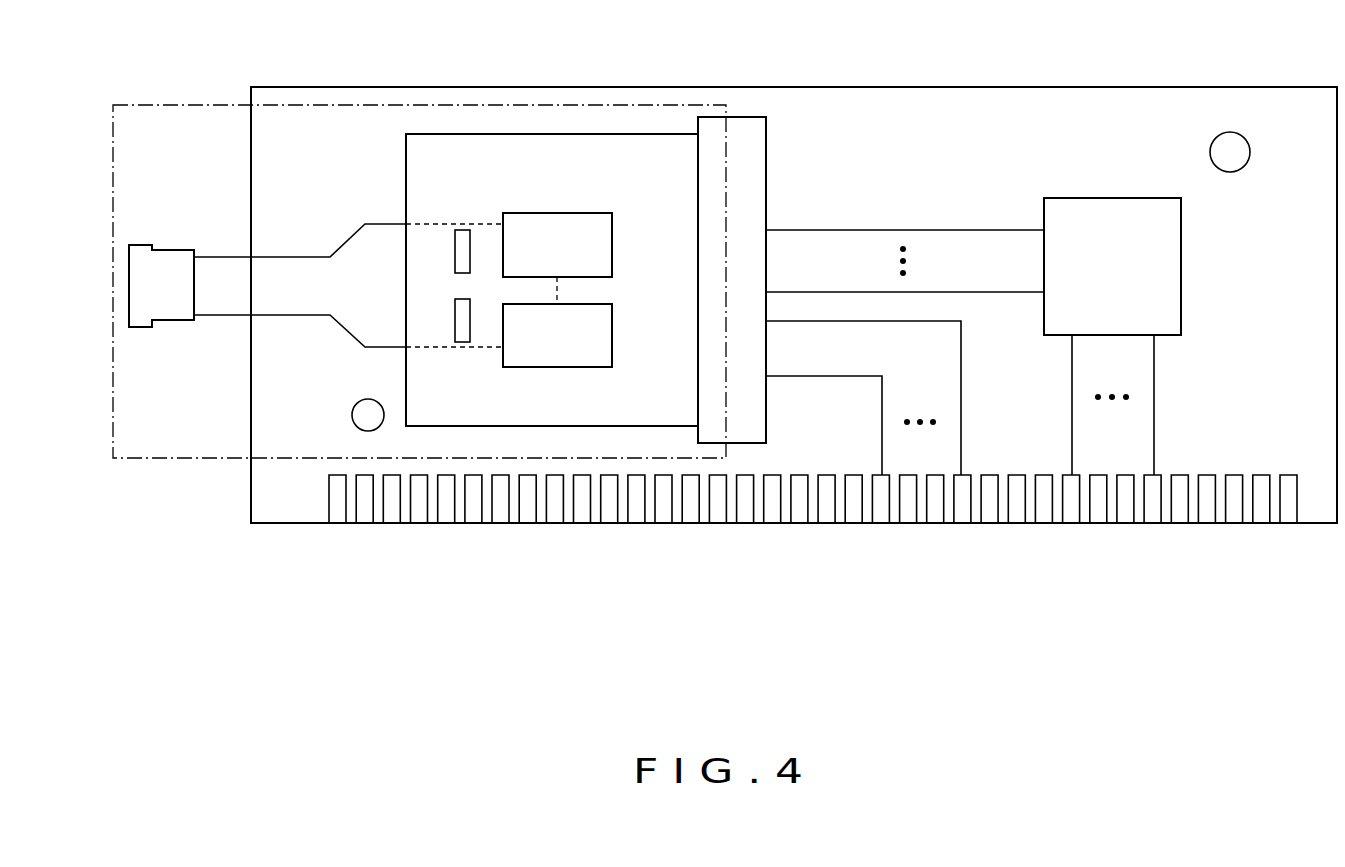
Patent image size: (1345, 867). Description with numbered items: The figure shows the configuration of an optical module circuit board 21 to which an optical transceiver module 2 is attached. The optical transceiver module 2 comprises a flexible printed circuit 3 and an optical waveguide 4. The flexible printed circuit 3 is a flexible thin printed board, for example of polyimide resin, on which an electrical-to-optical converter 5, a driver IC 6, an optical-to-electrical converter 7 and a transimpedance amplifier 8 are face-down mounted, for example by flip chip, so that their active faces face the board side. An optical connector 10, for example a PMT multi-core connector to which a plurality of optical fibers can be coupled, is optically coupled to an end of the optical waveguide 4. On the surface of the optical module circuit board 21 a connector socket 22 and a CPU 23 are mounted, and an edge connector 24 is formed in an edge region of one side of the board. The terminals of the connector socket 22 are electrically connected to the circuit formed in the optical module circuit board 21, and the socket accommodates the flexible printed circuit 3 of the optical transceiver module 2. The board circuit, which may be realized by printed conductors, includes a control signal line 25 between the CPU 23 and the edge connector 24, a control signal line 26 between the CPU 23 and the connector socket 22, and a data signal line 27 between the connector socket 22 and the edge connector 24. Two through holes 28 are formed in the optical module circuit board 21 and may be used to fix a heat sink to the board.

The optical transceiver module 2 is at (190, 460).
The flexible printed circuit 3 is at (406, 174).
The optical waveguide 4 is at (284, 257).
The electrical-to-optical (E/O) converter 5 is at (455, 248).
The driver IC 6 is at (612, 245).
The optical-to-electrical (O/E) converter 7 is at (455, 320).
The transimpedance amplifier (TIA) 8 is at (612, 337).
The optical connector 10 is at (171, 245).
The optical module circuit board 21 is at (1231, 87).
The connector socket 22 is at (766, 160).
The CPU 23 is at (1181, 270).
The edge connector 24 is at (1290, 475).
The control signal line 25 is at (1154, 393).
The control signal line 26 is at (892, 230).
The data signal line 27 is at (961, 397).
The through hole 28 is at (352, 415).